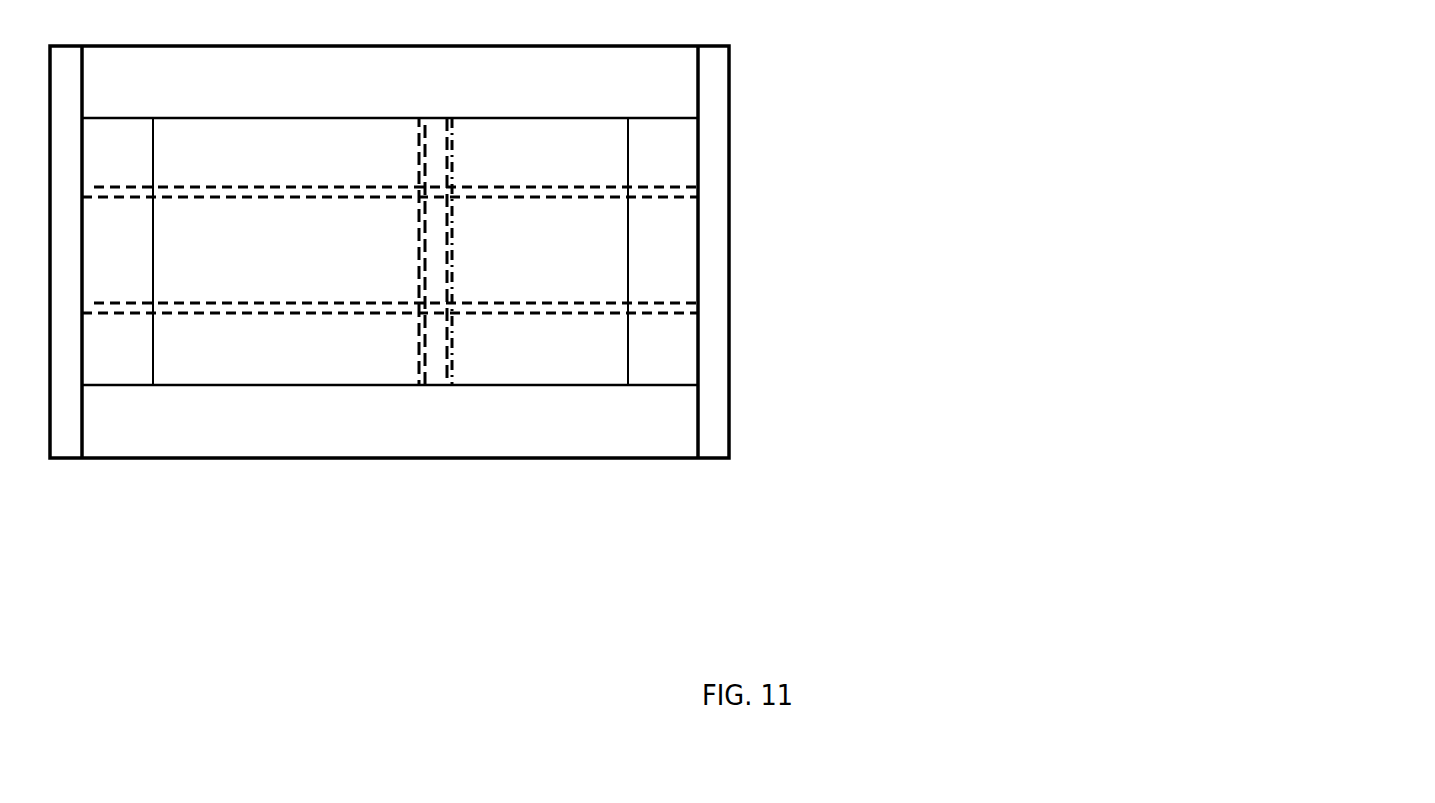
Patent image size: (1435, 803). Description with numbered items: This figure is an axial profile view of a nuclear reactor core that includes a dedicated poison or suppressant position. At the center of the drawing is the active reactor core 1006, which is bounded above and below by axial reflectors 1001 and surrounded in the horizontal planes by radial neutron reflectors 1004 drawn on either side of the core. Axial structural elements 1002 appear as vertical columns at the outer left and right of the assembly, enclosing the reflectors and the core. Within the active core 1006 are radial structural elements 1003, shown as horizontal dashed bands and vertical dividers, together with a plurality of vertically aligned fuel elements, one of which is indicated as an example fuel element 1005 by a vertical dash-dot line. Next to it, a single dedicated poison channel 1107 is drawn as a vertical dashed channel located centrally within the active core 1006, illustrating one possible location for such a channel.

The axial reflectors 1001 is at (665, 422).
The axial structural elements 1002 is at (82, 442).
The radial structural elements 1003 is at (498, 313).
The radial neutron reflectors 1004 is at (123, 247).
The fuel element 1005 is at (455, 230).
The active reactor core 1006 is at (557, 165).
The dedicated poison channel 1107 is at (425, 367).